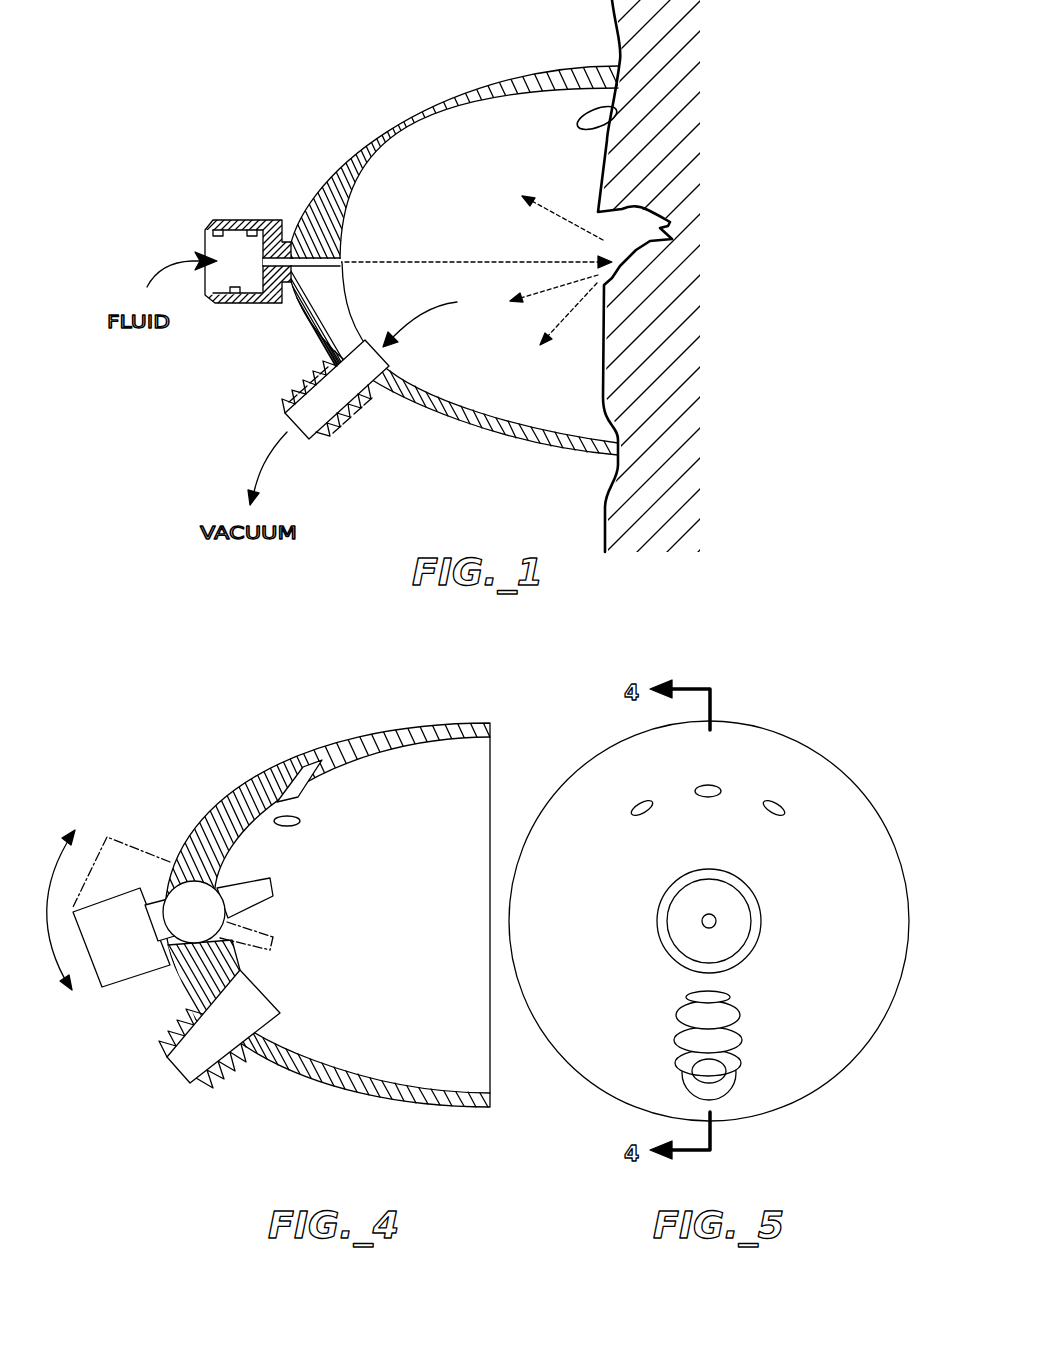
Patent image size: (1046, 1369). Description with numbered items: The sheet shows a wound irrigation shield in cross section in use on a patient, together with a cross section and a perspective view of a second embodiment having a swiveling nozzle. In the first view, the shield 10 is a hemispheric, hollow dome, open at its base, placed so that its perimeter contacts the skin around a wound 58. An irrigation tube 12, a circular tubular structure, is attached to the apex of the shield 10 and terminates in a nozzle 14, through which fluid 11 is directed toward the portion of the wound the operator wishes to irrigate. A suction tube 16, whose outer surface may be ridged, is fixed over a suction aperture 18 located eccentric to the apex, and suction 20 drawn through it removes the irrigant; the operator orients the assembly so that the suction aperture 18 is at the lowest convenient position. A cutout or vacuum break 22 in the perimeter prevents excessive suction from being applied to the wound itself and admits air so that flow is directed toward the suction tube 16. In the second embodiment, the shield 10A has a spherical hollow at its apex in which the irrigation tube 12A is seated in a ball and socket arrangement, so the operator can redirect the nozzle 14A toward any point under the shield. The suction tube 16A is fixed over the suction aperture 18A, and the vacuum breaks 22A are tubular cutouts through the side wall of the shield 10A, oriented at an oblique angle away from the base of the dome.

In FIG. 1, the shield 10 is at (401, 119).
In FIG. 1, the fluid 11 is at (172, 254).
In FIG. 1, the irrigation tube 12 is at (246, 219).
In FIG. 1, the nozzle 14 is at (341, 261).
In FIG. 1, the suction tube 16 is at (299, 388).
In FIG. 1, the suction aperture 18 is at (378, 362).
In FIG. 1, the suction 20 is at (268, 453).
In FIG. 1, the vacuum break 22 is at (600, 118).
In FIG. 1, the wound 58 is at (600, 216).
In FIG. 4, the shield 10A is at (404, 732).
In FIG. 5, the shield 10A is at (638, 733).
In FIG. 4, the irrigation tube 12A is at (150, 975).
In FIG. 5, the irrigation tube 12A is at (758, 905).
In FIG. 4, the nozzle 14A is at (272, 880).
In FIG. 4, the suction tube 16A is at (233, 1060).
In FIG. 5, the suction tube 16A is at (737, 1020).
In FIG. 4, the suction aperture 18A is at (252, 997).
In FIG. 4, the vacuum break 22A is at (292, 790).
In FIG. 5, the vacuum break 22A is at (778, 800).